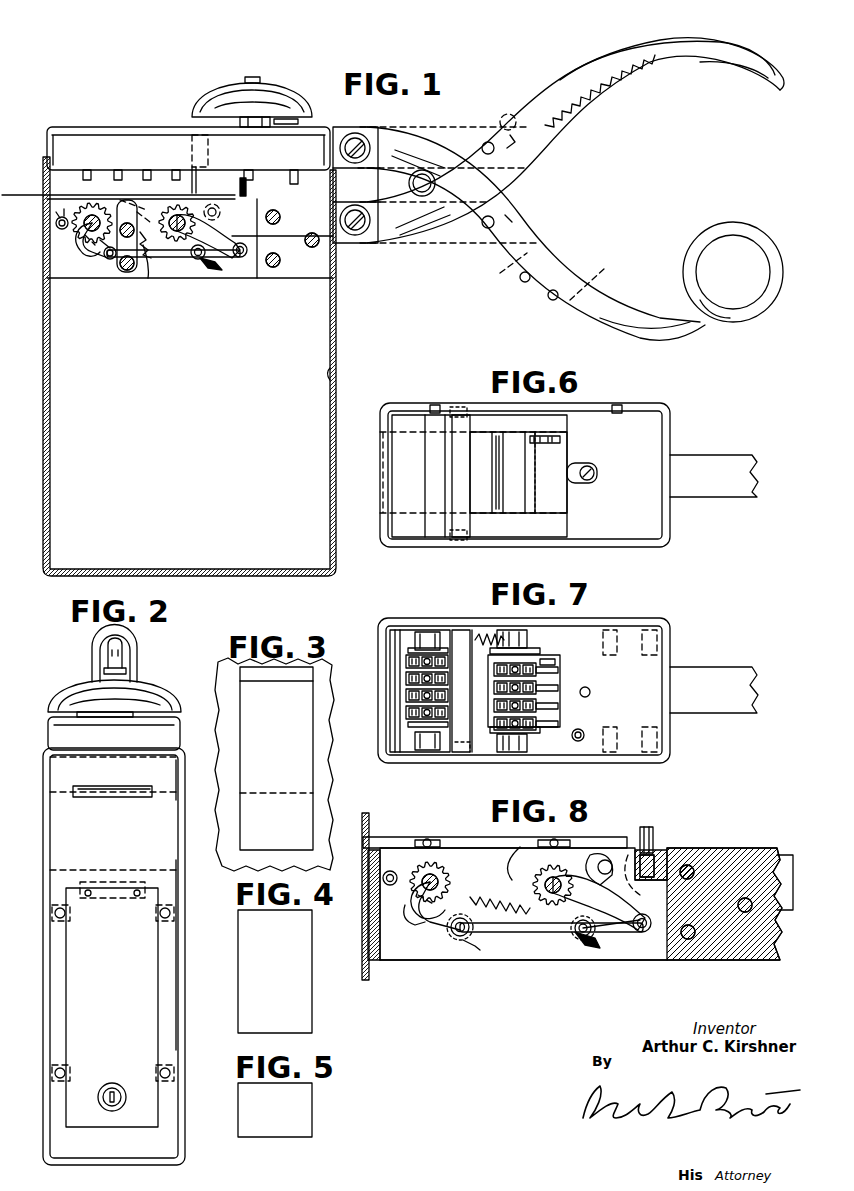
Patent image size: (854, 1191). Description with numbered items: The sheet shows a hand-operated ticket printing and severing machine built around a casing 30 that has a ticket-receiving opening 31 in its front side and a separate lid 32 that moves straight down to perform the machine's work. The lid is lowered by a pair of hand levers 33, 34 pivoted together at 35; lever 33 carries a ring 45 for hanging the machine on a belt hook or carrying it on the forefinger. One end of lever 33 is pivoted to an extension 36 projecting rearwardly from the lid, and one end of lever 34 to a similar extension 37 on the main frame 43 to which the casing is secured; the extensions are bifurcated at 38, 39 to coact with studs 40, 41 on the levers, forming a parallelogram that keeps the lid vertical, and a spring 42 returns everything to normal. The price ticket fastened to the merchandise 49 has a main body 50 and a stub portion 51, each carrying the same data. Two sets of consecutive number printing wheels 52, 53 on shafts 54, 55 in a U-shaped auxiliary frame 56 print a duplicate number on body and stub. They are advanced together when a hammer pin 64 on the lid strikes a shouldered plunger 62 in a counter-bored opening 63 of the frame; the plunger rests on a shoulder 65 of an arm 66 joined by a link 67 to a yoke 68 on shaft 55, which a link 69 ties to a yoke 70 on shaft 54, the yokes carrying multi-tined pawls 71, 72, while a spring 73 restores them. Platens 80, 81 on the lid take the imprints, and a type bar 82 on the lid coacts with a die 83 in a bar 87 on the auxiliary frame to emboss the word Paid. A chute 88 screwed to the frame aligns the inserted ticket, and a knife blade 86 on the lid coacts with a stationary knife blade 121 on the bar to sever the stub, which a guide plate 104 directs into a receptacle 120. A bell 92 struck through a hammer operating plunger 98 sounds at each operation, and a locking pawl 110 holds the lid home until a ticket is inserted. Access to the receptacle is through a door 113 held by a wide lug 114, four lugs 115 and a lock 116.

In FIG. 1, the casing 30 is at (336, 333).
In FIG. 2, the casing 30 is at (50, 857).
In FIG. 1, the opening 31 is at (43, 195).
In FIG. 2, the opening 31 is at (73, 792).
In FIG. 1, the lid 32 is at (88, 135).
In FIG. 2, the lid 32 is at (50, 728).
In FIG. 1, the hand lever 33 is at (548, 293).
In FIG. 1, the hand lever 34 is at (742, 70).
In FIG. 2, the hand lever 34 is at (92, 654).
In FIG. 1, the pivot 35 is at (432, 176).
In FIG. 1, the extension 36 is at (396, 134).
In FIG. 1, the extension 37 is at (405, 240).
In FIG. 1, the bifurcation 38 is at (520, 145).
In FIG. 1, the bifurcation 39 is at (512, 218).
In FIG. 1, the stud 40 is at (496, 150).
In FIG. 1, the stud 41 is at (496, 224).
In FIG. 1, the spring 42 is at (618, 83).
In FIG. 1, the main frame 43 is at (284, 274).
In FIG. 7, the main frame 43 is at (660, 668).
In FIG. 8, the main frame 43 is at (713, 957).
In FIG. 1, the ring 45 is at (718, 232).
In FIG. 3, the merchandise 49 is at (332, 729).
In FIG. 3, the main body 50 is at (305, 781).
In FIG. 4, the main body 50 is at (305, 1008).
In FIG. 3, the stub portion 51 is at (303, 806).
In FIG. 5, the stub portion 51 is at (308, 1101).
In FIG. 1, the consecutive number printing wheels 52 is at (78, 240).
In FIG. 7, the consecutive number printing wheels 52 is at (395, 718).
In FIG. 8, the consecutive number printing wheels 52 is at (456, 886).
In FIG. 1, the consecutive number printing wheels 53 is at (152, 258).
In FIG. 7, the consecutive number printing wheels 53 is at (538, 724).
In FIG. 8, the consecutive number printing wheels 53 is at (476, 934).
In FIG. 1, the shaft 54 is at (80, 222).
In FIG. 7, the shaft 54 is at (418, 632).
In FIG. 8, the shaft 54 is at (452, 876).
In FIG. 1, the shaft 55 is at (195, 226).
In FIG. 7, the shaft 55 is at (515, 632).
In FIG. 8, the shaft 55 is at (555, 880).
In FIG. 6, the U-shaped auxiliary frame 56 is at (603, 410).
In FIG. 7, the U-shaped auxiliary frame 56 is at (582, 627).
In FIG. 1, the shouldered plunger 62 is at (248, 188).
In FIG. 7, the shouldered plunger 62 is at (584, 729).
In FIG. 8, the shouldered plunger 62 is at (655, 860).
In FIG. 8, the counter-bored opening 63 is at (665, 880).
In FIG. 1, the hammer pin 64 is at (250, 171).
In FIG. 8, the shoulder 65 is at (644, 934).
In FIG. 1, the arm 66 is at (250, 238).
In FIG. 8, the arm 66 is at (640, 842).
In FIG. 1, the link 67 is at (241, 257).
In FIG. 8, the link 67 is at (600, 936).
In FIG. 1, the yoke 68 is at (222, 265).
In FIG. 8, the yoke 68 is at (585, 945).
In FIG. 1, the link 69 is at (143, 272).
In FIG. 8, the link 69 is at (480, 935).
In FIG. 1, the yoke 70 is at (107, 260).
In FIG. 8, the yoke 70 is at (456, 932).
In FIG. 1, the multi-tined pawl 71 is at (197, 260).
In FIG. 8, the multi-tined pawl 71 is at (520, 932).
In FIG. 1, the multi-tined pawl 72 is at (88, 252).
In FIG. 8, the multi-tined pawl 72 is at (415, 930).
In FIG. 1, the spring 73 is at (150, 250).
In FIG. 7, the spring 73 is at (492, 632).
In FIG. 8, the spring 73 is at (466, 910).
In FIG. 1, the platen 80 is at (85, 171).
In FIG. 1, the platen 81 is at (175, 171).
In FIG. 1, the type bar 82 is at (117, 171).
In FIG. 1, the die 83 is at (118, 200).
In FIG. 6, the die 83 is at (452, 455).
In FIG. 7, the die 83 is at (458, 632).
In FIG. 1, the knife blade 86 is at (147, 171).
In FIG. 1, the bar 87 is at (127, 270).
In FIG. 6, the bar 87 is at (450, 409).
In FIG. 7, the bar 87 is at (455, 742).
In FIG. 1, the chute 88 is at (212, 202).
In FIG. 6, the chute 88 is at (405, 500).
In FIG. 8, the chute 88 is at (405, 840).
In FIG. 1, the bell 92 is at (193, 106).
In FIG. 2, the bell 92 is at (55, 698).
In FIG. 1, the hammer operating plunger 98 is at (300, 118).
In FIG. 1, the guide plate 104 is at (153, 206).
In FIG. 8, the guide plate 104 is at (520, 847).
In FIG. 1, the locking pawl 110 is at (200, 173).
In FIG. 7, the locking pawl 110 is at (548, 660).
In FIG. 2, the door 113 is at (70, 972).
In FIG. 2, the lug 114 is at (118, 882).
In FIG. 2, the lug 115 is at (55, 905).
In FIG. 2, the lock 116 is at (115, 1083).
In FIG. 1, the receptacle 120 is at (334, 375).
In FIG. 1, the stationary knife blade 121 is at (140, 205).